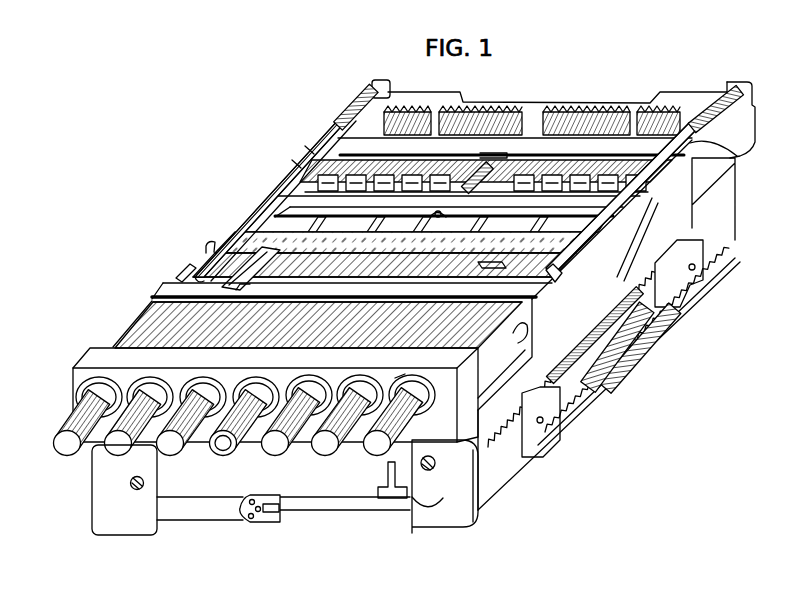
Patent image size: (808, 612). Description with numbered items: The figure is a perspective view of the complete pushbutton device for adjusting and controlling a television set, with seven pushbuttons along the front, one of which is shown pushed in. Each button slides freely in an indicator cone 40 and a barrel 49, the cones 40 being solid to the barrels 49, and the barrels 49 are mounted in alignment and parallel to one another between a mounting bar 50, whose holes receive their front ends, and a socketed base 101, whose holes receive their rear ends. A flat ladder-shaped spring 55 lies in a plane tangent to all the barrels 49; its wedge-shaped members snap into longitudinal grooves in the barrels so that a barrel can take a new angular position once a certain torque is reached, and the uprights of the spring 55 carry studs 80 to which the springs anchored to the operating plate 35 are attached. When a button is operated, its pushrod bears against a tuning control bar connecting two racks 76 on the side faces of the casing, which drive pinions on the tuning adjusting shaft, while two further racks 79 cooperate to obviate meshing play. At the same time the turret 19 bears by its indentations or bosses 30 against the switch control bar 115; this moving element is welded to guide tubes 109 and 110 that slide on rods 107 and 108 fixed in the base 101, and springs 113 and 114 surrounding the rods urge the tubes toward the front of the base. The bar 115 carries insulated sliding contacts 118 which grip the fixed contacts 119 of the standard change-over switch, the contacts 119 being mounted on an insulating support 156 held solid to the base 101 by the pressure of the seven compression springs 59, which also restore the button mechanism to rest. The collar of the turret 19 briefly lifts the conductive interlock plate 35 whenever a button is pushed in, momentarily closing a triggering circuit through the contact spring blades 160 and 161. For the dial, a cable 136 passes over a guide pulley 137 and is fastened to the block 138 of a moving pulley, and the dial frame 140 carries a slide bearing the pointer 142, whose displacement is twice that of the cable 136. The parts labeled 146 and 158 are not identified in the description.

The turret 19 is at (399, 247).
The indentations or bosses 30 is at (437, 212).
The interlock plate 35 is at (209, 246).
The indicator cone 40 is at (372, 396).
The barrel 49 is at (516, 332).
The mounting bar 50 is at (92, 368).
The ladder spring 55 is at (128, 328).
The compression spring 59 is at (470, 162).
The rack 76 is at (664, 272).
The rack 79 is at (592, 420).
The stud 80 is at (268, 298).
The socketed base 101 is at (162, 286).
The rod 107 is at (562, 276).
The rod 108 is at (188, 272).
The guide tube 109 is at (740, 153).
The guide tube 110 is at (255, 221).
The spring 113 is at (754, 117).
The spring 114 is at (362, 113).
The switch control bar 115 is at (318, 198).
The sliding contact 118 is at (322, 175).
The fixed contact 119 is at (312, 146).
The cable 136 is at (337, 511).
The guide pulley 137 is at (427, 513).
The block 138 is at (261, 522).
The frame 140 is at (472, 528).
The pointer 142 is at (381, 500).
The screw 146 is at (131, 487).
The insulating support 156 is at (570, 147).
The comb 158 is at (503, 155).
The contact spring blade 160 is at (212, 262).
The contact spring blade 161 is at (478, 266).